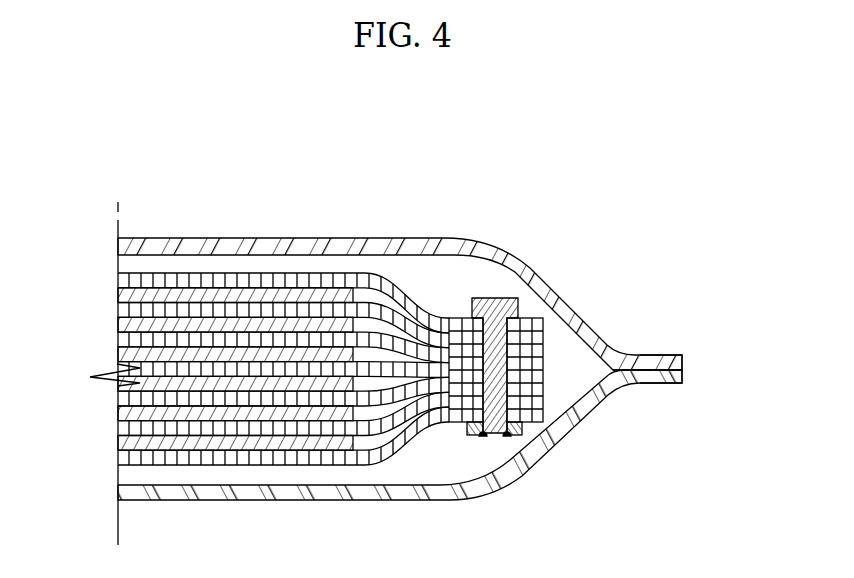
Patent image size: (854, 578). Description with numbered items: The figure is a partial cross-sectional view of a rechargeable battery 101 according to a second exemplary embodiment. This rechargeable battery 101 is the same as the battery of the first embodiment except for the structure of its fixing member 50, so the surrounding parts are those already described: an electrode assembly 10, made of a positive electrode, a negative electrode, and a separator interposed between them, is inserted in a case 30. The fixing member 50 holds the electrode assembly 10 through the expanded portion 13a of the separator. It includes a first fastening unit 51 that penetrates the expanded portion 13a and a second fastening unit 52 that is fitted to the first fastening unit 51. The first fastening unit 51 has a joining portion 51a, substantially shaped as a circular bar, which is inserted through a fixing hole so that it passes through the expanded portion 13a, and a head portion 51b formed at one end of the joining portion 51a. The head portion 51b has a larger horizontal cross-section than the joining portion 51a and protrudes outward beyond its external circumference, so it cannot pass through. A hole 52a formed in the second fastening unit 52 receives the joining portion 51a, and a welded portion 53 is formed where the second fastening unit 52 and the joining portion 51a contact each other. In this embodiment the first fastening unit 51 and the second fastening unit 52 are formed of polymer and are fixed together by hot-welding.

The rechargeable battery 101 is at (370, 152).
The electrode assembly 10 is at (253, 272).
The expanded portion 13a is at (428, 438).
The case 30 is at (662, 358).
The fixing member 50 is at (686, 413).
The first fastening unit 51 is at (521, 353).
The joining portion 51a is at (577, 313).
The head portion 51b is at (493, 302).
The second fastening unit 52 is at (538, 430).
The hole 52a is at (507, 437).
The welded portion 53 is at (483, 437).